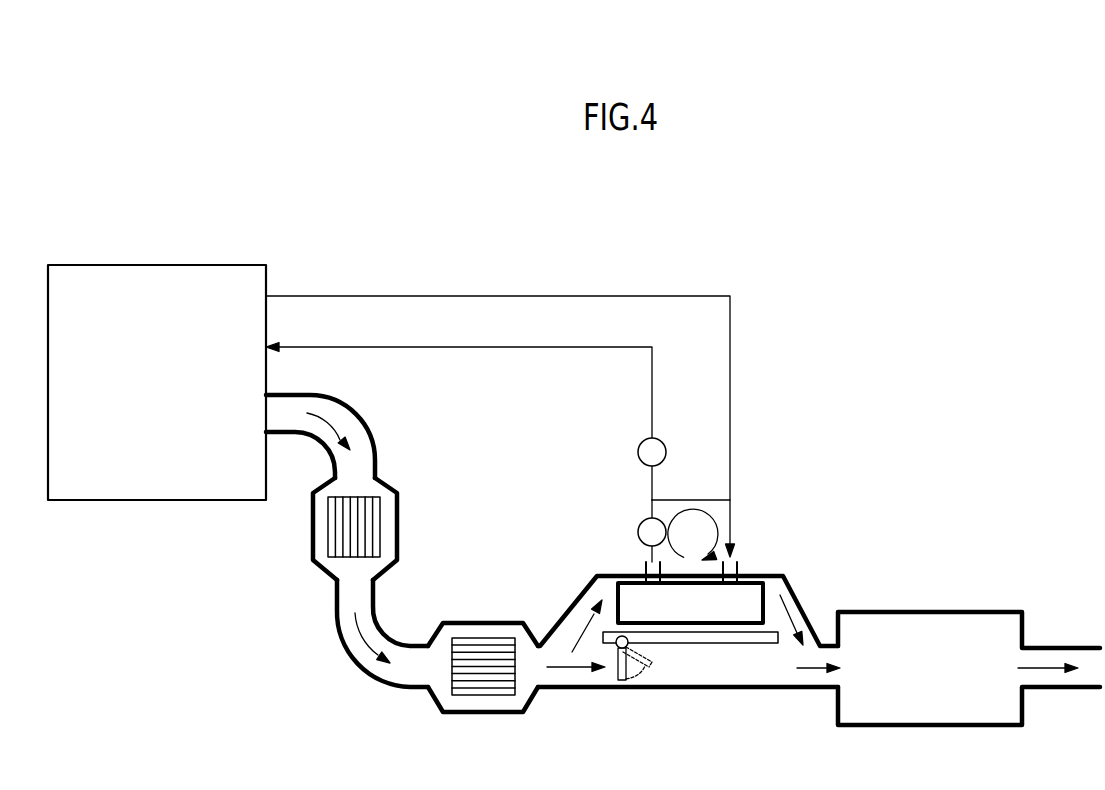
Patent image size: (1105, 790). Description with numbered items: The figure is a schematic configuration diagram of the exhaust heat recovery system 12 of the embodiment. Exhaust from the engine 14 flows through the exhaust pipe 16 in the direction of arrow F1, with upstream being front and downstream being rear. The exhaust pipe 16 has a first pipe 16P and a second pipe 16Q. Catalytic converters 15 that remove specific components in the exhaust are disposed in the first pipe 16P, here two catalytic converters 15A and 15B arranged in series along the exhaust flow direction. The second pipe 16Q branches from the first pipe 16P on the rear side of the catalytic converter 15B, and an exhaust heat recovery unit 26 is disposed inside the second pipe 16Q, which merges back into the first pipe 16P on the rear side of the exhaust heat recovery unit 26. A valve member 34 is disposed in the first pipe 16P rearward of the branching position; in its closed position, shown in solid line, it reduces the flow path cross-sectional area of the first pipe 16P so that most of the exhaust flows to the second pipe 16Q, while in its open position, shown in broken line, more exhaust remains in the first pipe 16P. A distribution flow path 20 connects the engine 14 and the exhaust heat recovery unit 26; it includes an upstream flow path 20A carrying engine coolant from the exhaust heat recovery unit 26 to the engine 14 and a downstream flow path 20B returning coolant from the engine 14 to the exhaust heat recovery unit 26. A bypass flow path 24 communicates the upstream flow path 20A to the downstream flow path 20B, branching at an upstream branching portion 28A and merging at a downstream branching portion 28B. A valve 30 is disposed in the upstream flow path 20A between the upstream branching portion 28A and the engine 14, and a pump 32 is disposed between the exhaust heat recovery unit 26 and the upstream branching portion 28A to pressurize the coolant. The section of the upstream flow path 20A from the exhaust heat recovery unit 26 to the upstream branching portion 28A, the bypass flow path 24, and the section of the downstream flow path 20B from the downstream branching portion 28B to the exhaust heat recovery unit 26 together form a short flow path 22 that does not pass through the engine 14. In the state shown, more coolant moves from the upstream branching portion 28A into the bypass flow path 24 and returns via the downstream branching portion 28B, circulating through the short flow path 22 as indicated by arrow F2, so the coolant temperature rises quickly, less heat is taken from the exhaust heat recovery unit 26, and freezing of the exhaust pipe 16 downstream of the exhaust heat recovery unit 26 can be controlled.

The exhaust heat recovery system 12 is at (823, 306).
The engine 14 is at (222, 265).
The catalytic converter 15 is at (365, 632).
The catalytic converter 15A is at (313, 547).
The catalytic converter 15B is at (492, 715).
The exhaust pipe 16 is at (683, 560).
The first pipe 16P is at (360, 422).
The second pipe 16Q is at (767, 573).
The distribution flow path 20 is at (498, 387).
The upstream flow path 20A is at (530, 348).
The downstream flow path 20B is at (577, 296).
The short flow path 22 is at (712, 483).
The bypass flow path 24 is at (685, 500).
The exhaust heat recovery unit 26 is at (627, 580).
The upstream branching portion 28A is at (640, 491).
The downstream branching portion 28B is at (743, 488).
The valve 30 is at (642, 440).
The pump 32 is at (638, 528).
The valve member 34 is at (627, 672).
The flow direction of the exhaust F1 is at (325, 435).
The flow of engine coolant through the short flow path F2 is at (713, 517).